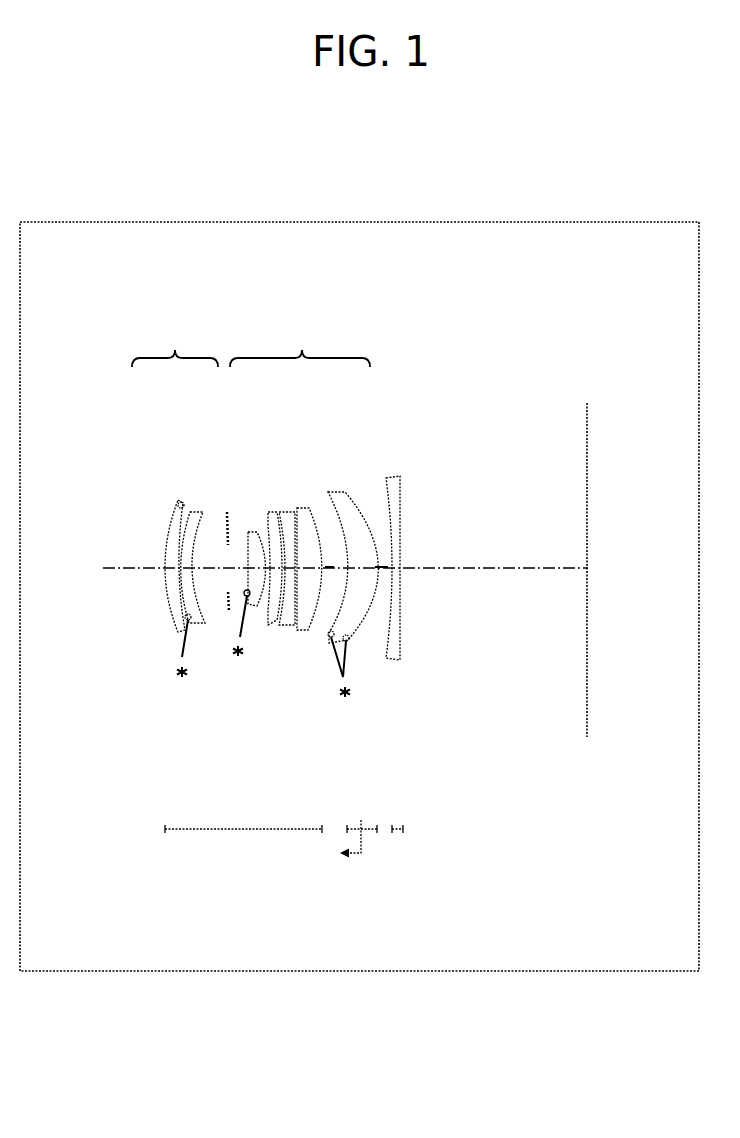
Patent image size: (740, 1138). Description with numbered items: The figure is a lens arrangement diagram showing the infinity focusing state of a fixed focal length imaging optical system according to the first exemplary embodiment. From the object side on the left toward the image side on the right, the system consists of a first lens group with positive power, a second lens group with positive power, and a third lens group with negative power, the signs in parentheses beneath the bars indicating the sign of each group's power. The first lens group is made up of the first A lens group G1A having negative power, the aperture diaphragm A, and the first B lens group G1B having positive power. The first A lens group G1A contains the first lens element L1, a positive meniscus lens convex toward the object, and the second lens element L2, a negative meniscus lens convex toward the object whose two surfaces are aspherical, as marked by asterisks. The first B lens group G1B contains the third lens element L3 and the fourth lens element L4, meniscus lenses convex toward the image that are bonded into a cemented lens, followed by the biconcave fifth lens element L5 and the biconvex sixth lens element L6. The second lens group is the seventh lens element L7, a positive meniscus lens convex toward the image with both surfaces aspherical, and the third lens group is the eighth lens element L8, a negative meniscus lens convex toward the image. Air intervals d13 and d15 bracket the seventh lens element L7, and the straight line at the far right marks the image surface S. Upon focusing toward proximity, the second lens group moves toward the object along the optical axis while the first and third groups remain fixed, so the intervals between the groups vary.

The first lens element L1 is at (180, 505).
The second lens element L2 is at (198, 512).
The third lens element L3 is at (248, 530).
The fourth lens element L4 is at (265, 512).
The fifth lens element L5 is at (287, 514).
The sixth lens element L6 is at (303, 507).
The seventh lens element L7 is at (338, 494).
The eighth lens element L8 is at (396, 478).
The aperture diaphragm A is at (226, 512).
The image surface S is at (587, 493).
The air gap distance d13 is at (330, 568).
The air gap distance d15 is at (381, 568).
The first A lens group G1A is at (175, 344).
The first B lens group G1B is at (300, 344).